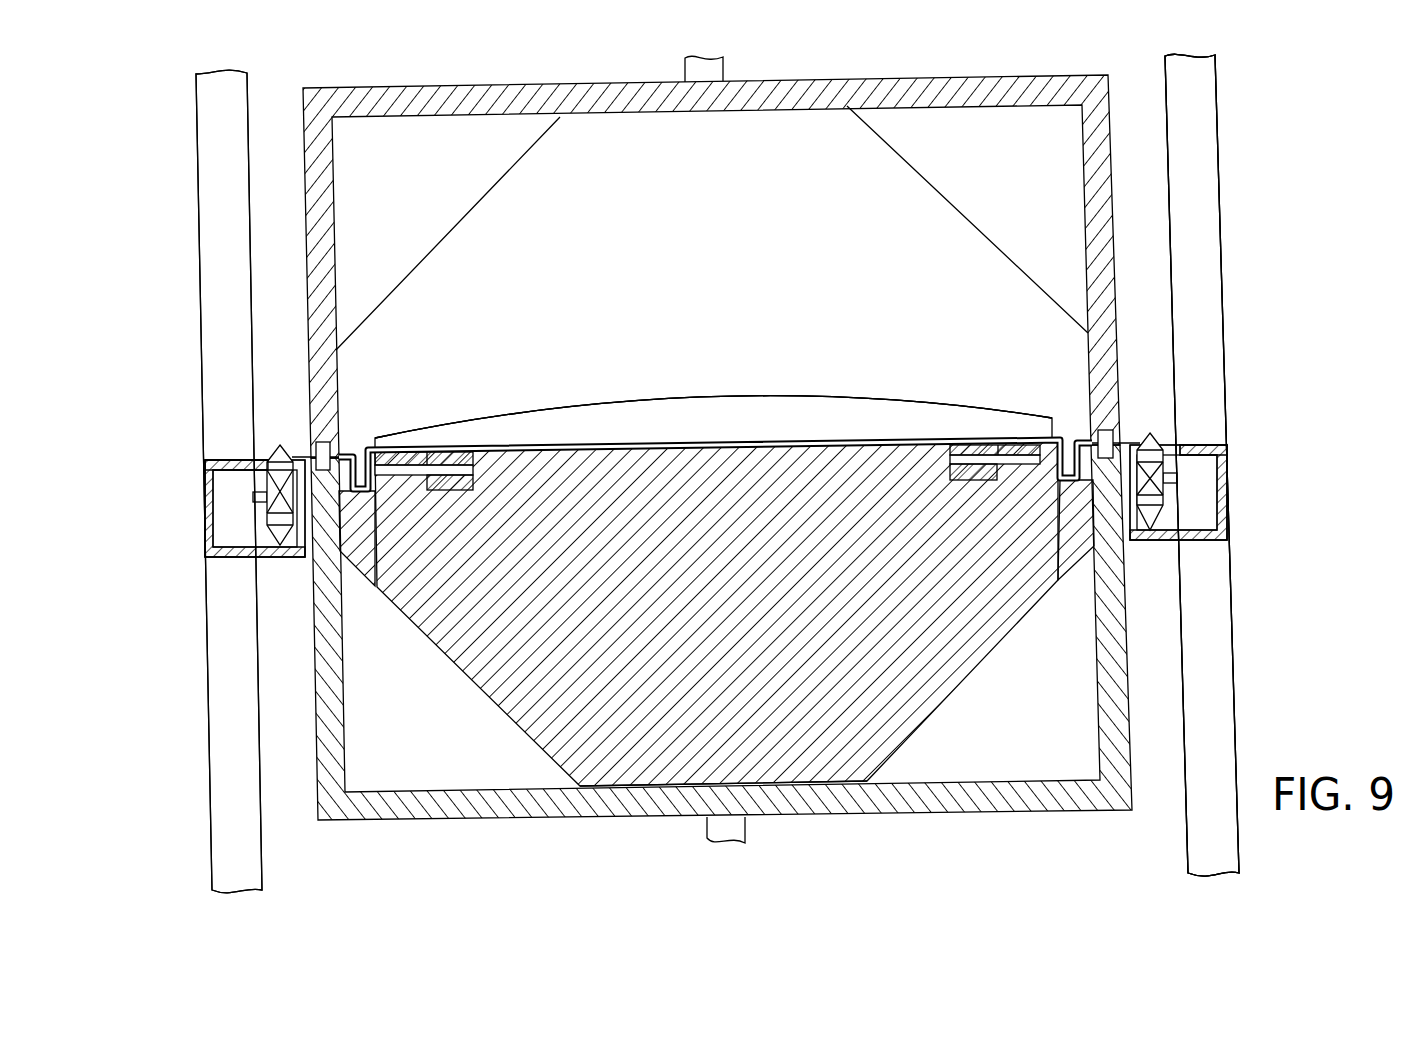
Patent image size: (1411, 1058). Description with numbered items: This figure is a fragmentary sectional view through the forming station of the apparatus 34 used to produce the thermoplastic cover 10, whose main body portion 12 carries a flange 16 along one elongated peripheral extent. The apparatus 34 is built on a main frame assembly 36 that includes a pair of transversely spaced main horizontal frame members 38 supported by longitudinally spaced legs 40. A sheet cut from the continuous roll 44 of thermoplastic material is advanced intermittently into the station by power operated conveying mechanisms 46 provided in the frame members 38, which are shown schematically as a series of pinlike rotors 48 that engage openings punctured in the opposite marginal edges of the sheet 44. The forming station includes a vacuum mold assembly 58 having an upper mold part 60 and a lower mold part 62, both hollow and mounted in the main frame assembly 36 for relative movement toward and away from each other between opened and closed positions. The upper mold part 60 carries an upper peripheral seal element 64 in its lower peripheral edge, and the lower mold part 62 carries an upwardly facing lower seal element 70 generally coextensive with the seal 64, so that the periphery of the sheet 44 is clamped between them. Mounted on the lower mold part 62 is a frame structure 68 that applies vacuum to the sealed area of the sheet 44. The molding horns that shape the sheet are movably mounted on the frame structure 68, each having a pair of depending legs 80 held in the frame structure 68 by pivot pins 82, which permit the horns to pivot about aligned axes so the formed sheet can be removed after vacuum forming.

The cover 10 is at (572, 398).
The main body portion 12 is at (622, 402).
The flange 16 is at (774, 418).
The apparatus 34 is at (1270, 183).
The main frame assembly 36 is at (1235, 337).
The main horizontal frame members 38 is at (215, 523).
The legs 40 is at (218, 698).
The continuous roll of thermoplastic material 44 is at (520, 447).
The conveying mechanisms 46 is at (235, 466).
The pinlike rotors 48 is at (280, 455).
The vacuum mold assembly 58 is at (288, 331).
The upper mold part 60 is at (310, 178).
The lower mold part 62 is at (317, 750).
The upper peripheral seal element 64 is at (370, 446).
The frame structure 68 is at (655, 738).
The lower seal element 70 is at (333, 472).
The depending legs 80 is at (466, 486).
The pivot pins 82 is at (407, 477).